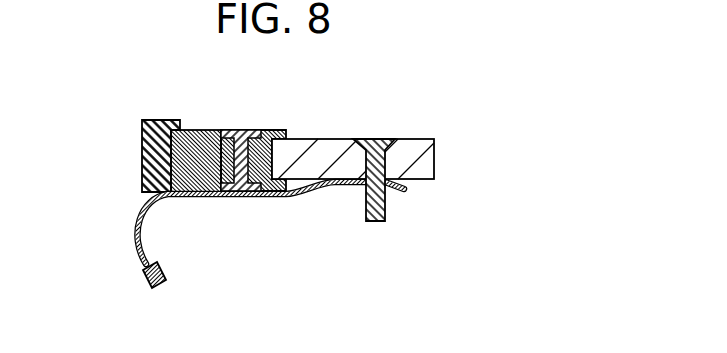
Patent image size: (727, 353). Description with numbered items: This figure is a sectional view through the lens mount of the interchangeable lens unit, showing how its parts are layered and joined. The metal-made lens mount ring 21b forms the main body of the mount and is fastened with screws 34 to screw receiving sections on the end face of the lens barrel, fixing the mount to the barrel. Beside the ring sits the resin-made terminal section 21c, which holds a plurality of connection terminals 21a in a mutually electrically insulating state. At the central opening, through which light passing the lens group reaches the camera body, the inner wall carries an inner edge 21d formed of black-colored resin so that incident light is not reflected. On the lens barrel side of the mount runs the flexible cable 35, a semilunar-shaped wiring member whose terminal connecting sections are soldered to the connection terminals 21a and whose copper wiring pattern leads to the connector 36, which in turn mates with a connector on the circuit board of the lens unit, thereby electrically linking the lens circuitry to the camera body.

The connection terminals 21a is at (242, 134).
The lens mount ring 21b is at (430, 157).
The terminal section 21c is at (203, 140).
The inner edge 21d is at (149, 125).
The screws 34 is at (377, 139).
The flexible cable 35 is at (155, 205).
The connector 36 is at (142, 280).